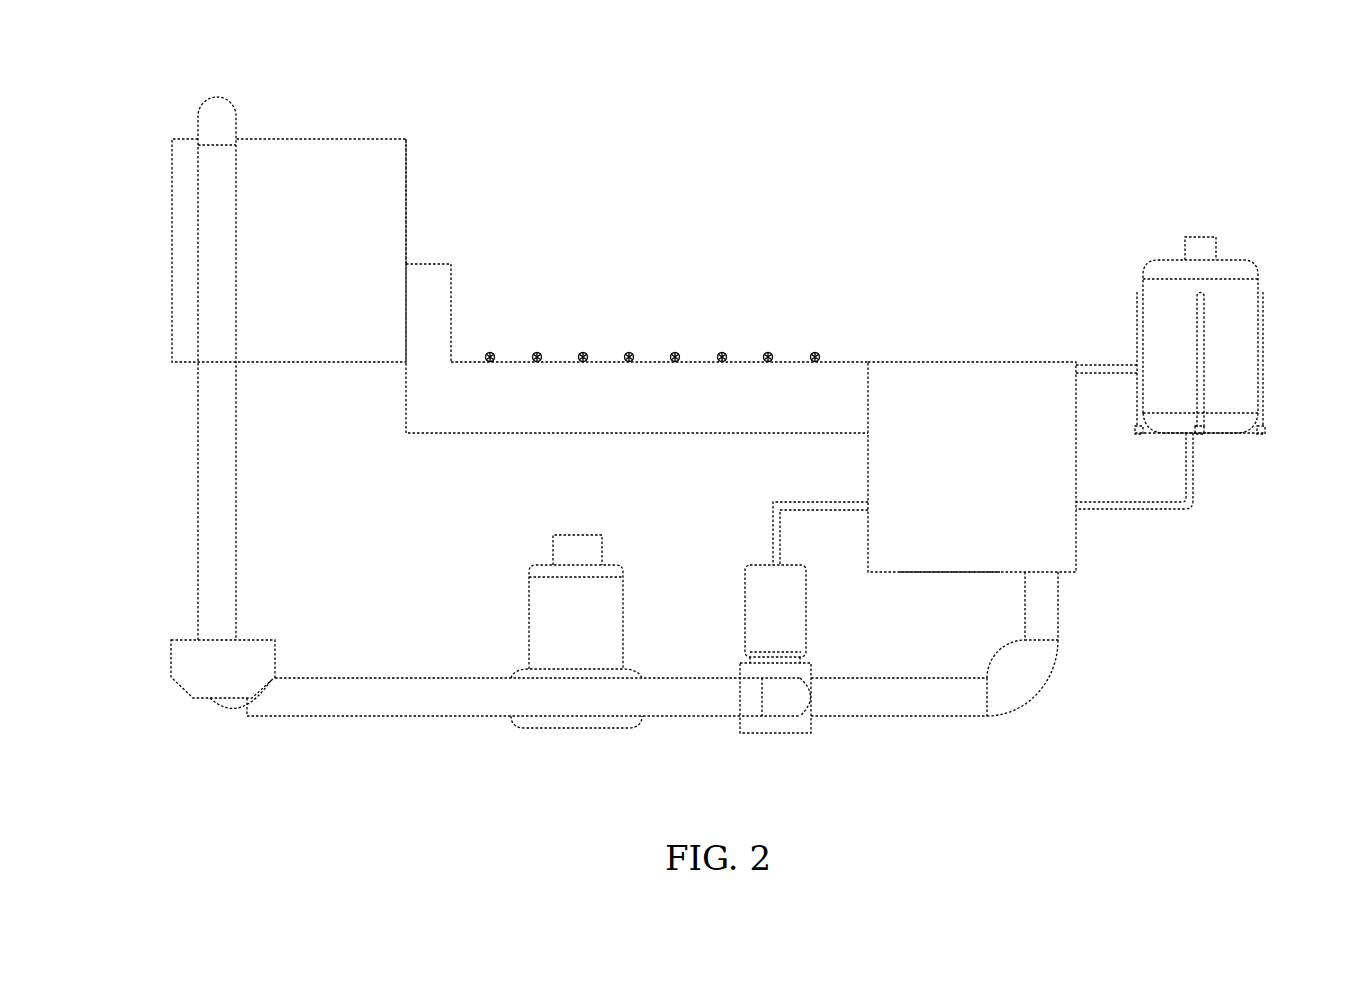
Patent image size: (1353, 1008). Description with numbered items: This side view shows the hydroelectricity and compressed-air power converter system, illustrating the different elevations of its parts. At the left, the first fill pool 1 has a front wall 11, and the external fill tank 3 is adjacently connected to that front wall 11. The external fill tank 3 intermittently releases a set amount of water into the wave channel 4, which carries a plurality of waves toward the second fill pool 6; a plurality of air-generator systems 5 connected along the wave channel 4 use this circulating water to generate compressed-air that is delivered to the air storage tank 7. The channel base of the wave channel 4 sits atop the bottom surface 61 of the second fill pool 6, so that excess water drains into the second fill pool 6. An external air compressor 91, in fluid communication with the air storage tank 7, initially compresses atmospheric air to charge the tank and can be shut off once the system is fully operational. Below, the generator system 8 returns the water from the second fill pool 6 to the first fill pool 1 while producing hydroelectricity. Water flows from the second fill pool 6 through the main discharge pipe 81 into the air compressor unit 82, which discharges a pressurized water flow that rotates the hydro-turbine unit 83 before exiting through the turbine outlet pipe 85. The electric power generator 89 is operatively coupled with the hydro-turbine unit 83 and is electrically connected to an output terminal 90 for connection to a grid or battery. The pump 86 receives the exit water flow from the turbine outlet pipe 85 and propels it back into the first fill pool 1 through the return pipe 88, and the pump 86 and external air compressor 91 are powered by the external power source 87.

The first fill pool 1 is at (318, 126).
The front wall 11 is at (407, 170).
The external fill tank 3 is at (432, 257).
The wave channel 4 is at (498, 426).
The air-generator systems 5 is at (513, 342).
The second fill pool 6 is at (1001, 351).
The bottom surface 61 is at (945, 573).
The air storage tank 7 is at (1255, 349).
The external air compressor 91 is at (1201, 242).
The return pipe 88 is at (236, 478).
The external power source 87 is at (171, 652).
The pump 86 is at (232, 701).
The turbine outlet pipe 85 is at (368, 717).
The generator system 8 is at (530, 756).
The hydro-turbine unit 83 is at (612, 730).
The electric power generator 89 is at (529, 586).
The output terminal 90 is at (578, 540).
The air compressor unit 82 is at (805, 637).
The main discharge pipe 81 is at (1025, 699).